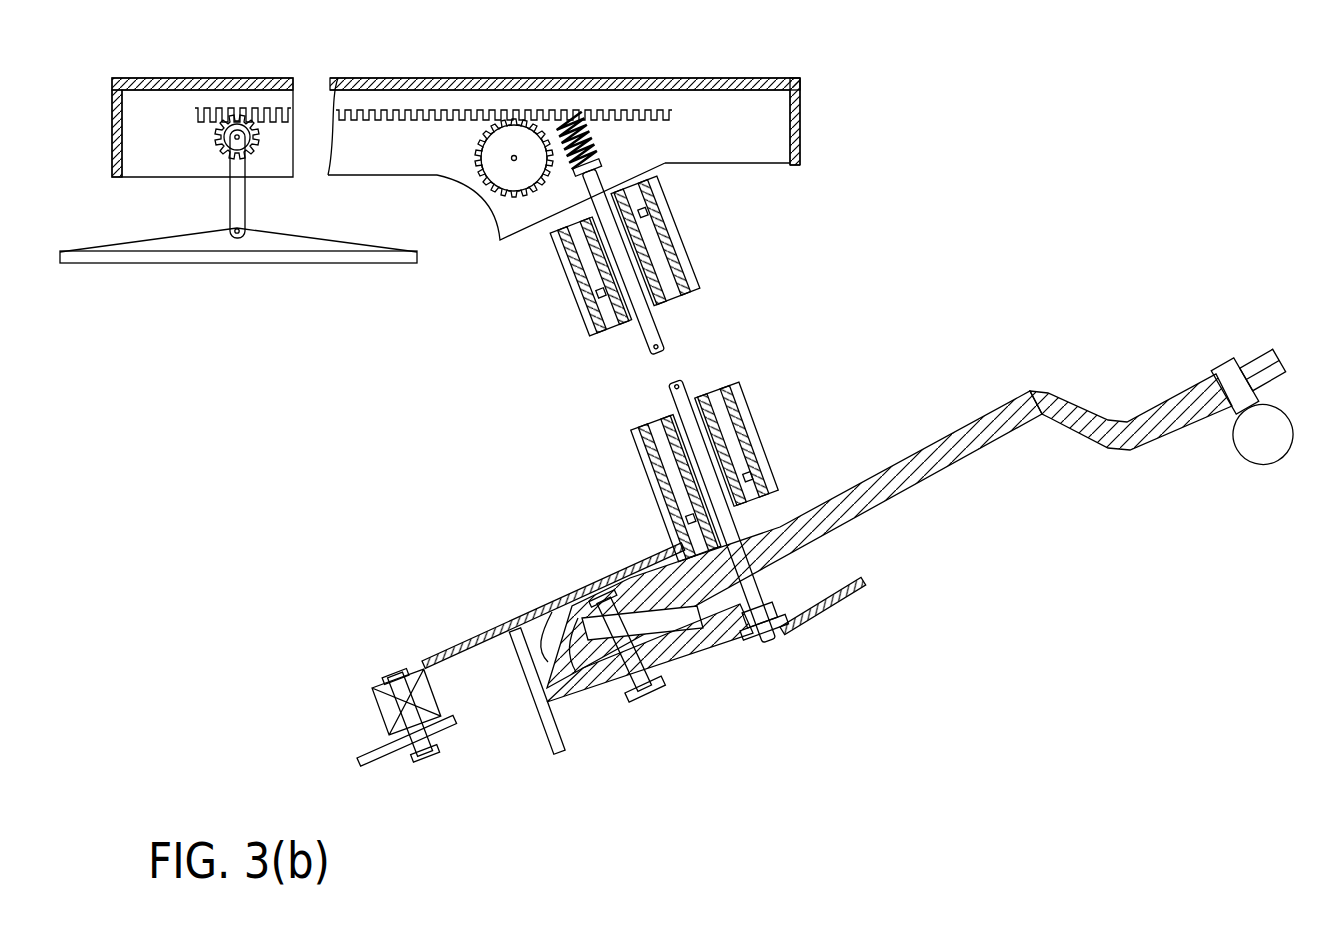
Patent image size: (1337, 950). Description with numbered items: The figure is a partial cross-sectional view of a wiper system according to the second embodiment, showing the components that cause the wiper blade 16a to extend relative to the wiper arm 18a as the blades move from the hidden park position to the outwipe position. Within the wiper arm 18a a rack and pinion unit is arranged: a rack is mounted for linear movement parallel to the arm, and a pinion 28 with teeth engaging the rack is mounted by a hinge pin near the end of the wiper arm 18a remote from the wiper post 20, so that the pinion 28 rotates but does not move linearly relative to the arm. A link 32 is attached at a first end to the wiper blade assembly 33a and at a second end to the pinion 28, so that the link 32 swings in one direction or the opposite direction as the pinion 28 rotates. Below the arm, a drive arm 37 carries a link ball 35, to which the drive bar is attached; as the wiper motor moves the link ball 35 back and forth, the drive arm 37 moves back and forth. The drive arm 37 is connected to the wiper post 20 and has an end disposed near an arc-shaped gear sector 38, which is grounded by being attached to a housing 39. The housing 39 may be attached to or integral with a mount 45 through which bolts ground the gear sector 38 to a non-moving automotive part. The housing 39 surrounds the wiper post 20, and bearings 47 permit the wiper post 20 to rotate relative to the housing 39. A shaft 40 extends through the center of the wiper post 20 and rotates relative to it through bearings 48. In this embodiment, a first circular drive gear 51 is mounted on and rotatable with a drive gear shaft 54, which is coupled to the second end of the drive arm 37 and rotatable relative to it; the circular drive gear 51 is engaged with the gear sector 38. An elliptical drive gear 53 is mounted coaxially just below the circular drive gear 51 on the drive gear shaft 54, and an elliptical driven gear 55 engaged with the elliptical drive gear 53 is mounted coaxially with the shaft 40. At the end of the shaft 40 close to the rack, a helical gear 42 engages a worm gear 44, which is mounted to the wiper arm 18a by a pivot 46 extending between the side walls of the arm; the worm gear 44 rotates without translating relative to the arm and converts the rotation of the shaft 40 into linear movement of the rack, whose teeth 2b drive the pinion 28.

The pinion 28 is at (236, 128).
The wiper arm 18a is at (362, 84).
The rack teeth 2b is at (458, 110).
The worm gear 44 is at (516, 124).
The helical gear 42 is at (598, 143).
The link 32 is at (244, 203).
The wiper blade assembly 33a is at (130, 248).
The wiper blade 16a is at (242, 264).
The pivot 46 is at (514, 159).
The bearings 47 is at (645, 232).
The wiper post 20 is at (673, 320).
The housing 39 is at (580, 285).
The bearings 48 is at (618, 340).
The drive arm 37 is at (926, 457).
The link ball 35 is at (1265, 440).
The circular drive gear 51 is at (567, 640).
The mount 45 is at (380, 692).
The elliptical driven gear 55 is at (862, 595).
The shaft 40 is at (800, 632).
The elliptical drive gear 53 is at (706, 667).
The drive gear shaft 54 is at (650, 700).
The arc-shaped gear sector 38 is at (548, 748).